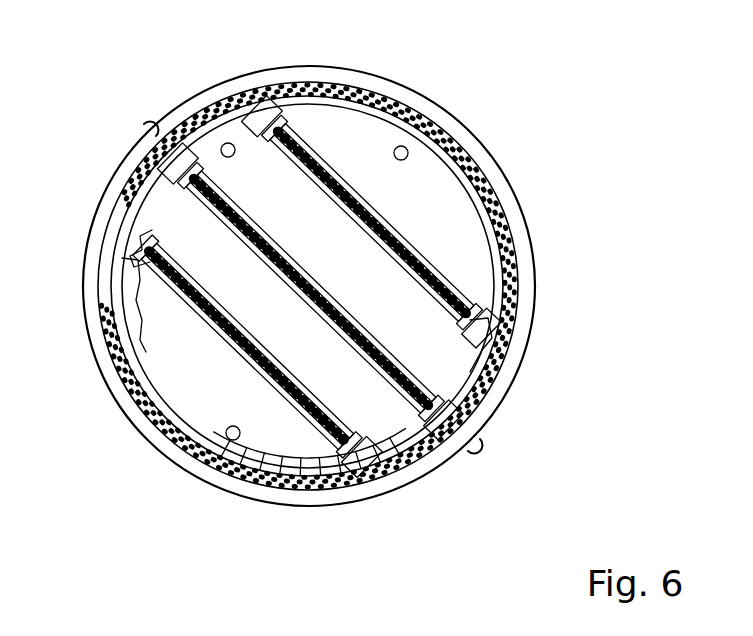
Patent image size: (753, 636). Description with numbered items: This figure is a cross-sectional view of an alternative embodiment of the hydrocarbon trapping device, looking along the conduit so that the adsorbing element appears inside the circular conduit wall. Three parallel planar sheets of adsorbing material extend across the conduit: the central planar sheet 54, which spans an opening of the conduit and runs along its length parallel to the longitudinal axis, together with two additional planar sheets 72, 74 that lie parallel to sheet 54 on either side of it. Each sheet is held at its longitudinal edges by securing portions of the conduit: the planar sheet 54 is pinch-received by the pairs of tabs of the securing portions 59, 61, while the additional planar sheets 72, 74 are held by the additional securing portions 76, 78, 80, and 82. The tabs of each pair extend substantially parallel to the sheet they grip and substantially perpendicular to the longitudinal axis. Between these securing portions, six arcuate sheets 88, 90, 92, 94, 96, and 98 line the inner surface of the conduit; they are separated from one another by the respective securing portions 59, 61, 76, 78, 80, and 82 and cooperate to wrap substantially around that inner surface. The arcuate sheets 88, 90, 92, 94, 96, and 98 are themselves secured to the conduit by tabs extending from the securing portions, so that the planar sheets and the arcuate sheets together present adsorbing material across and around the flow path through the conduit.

The planar sheet 54 is at (300, 297).
The securing portion 59 is at (195, 198).
The securing portion 61 is at (390, 393).
The planar sheet 72 is at (236, 357).
The planar sheet 74 is at (386, 238).
The securing portion 76 is at (176, 245).
The securing portion 78 is at (275, 147).
The securing portion 80 is at (410, 437).
The securing portion 82 is at (450, 325).
The arcuate sheet 88 is at (404, 146).
The arcuate sheet 90 is at (450, 370).
The arcuate sheet 92 is at (357, 422).
The arcuate sheet 94 is at (226, 438).
The arcuate sheet 96 is at (138, 218).
The arcuate sheet 98 is at (224, 143).